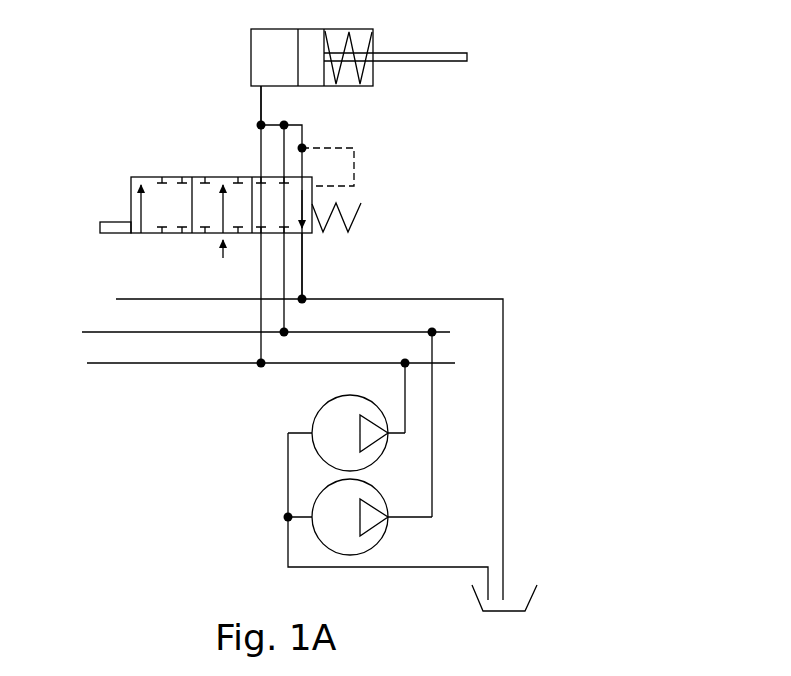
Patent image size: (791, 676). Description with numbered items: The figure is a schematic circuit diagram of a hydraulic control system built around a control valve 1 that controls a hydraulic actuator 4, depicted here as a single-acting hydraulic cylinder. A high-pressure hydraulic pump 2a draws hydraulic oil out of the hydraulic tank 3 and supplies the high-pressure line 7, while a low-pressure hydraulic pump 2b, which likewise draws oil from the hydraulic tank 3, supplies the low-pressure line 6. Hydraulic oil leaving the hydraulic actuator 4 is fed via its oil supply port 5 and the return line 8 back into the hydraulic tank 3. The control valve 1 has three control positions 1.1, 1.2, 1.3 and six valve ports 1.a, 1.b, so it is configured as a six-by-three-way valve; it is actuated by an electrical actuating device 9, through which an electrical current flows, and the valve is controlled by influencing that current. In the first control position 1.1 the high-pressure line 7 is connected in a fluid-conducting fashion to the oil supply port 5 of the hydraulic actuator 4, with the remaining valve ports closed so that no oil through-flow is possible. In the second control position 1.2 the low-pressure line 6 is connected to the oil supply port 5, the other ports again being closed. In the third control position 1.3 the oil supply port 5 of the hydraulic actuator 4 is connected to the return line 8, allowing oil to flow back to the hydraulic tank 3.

The control valve 1 is at (229, 195).
The first control position 1.1 is at (147, 155).
The second control position 1.2 is at (223, 258).
The third control position 1.3 is at (315, 238).
The valve ports 1.a is at (261, 233).
The valve ports 1.b is at (261, 177).
The high-pressure hydraulic pump 2a is at (312, 418).
The low-pressure hydraulic pump 2b is at (312, 500).
The hydraulic tank 3 is at (515, 600).
The hydraulic actuator 4 is at (343, 86).
The oil supply port 5 is at (261, 103).
The low-pressure line 6 is at (82, 332).
The high-pressure line 7 is at (87, 363).
The return line 8 is at (116, 299).
The electrical actuating device 9 is at (113, 233).